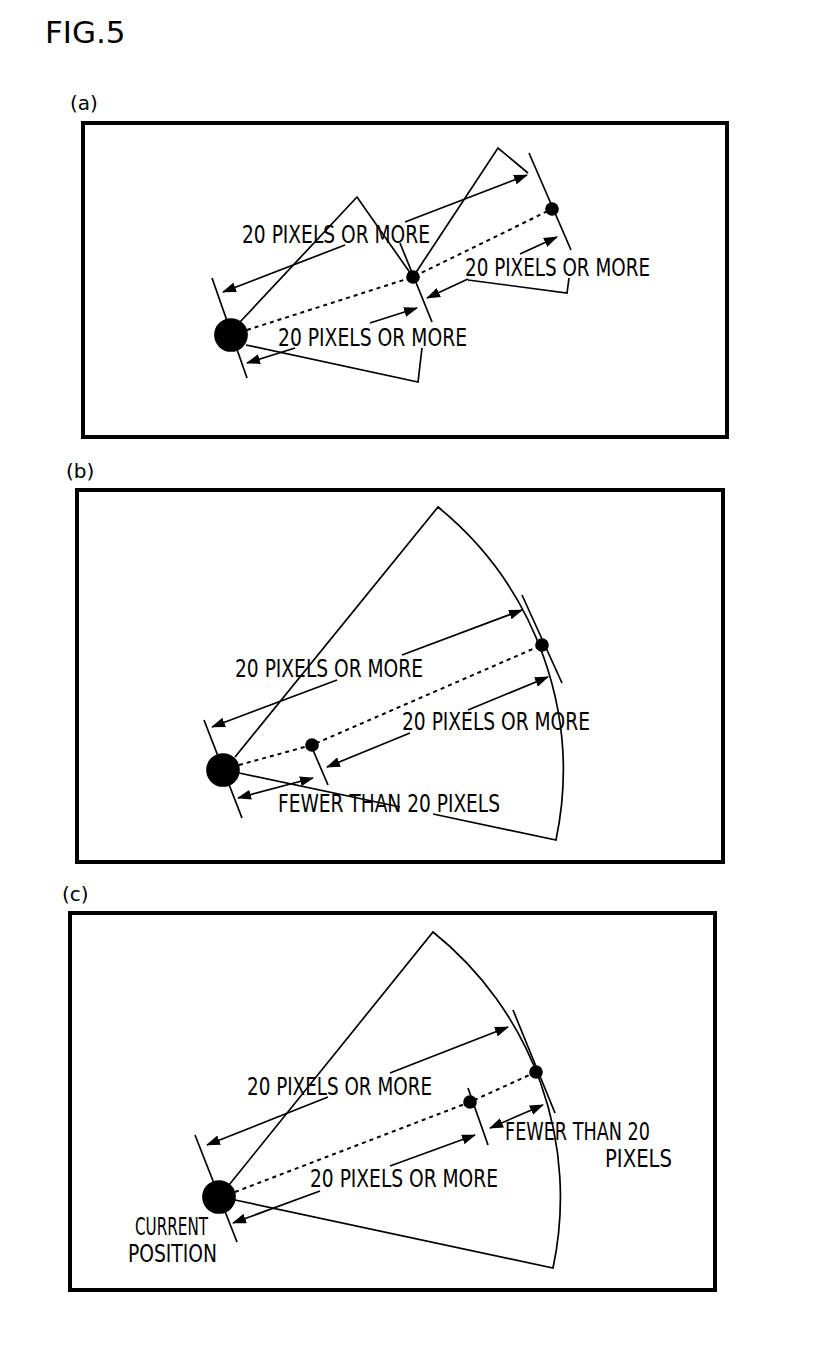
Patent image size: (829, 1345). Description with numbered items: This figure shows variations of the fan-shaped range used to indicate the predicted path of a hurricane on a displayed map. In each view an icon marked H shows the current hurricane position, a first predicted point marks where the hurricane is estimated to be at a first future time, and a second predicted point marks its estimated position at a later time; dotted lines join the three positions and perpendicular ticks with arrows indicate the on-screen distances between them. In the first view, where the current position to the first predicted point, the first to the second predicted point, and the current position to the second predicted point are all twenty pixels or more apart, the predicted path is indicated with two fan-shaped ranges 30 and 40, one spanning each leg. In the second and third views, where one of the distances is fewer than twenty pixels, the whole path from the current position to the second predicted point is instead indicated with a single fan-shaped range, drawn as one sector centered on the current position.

The fan-shaped range 30 is at (328, 206).
The fan-shaped range 40 is at (452, 192).